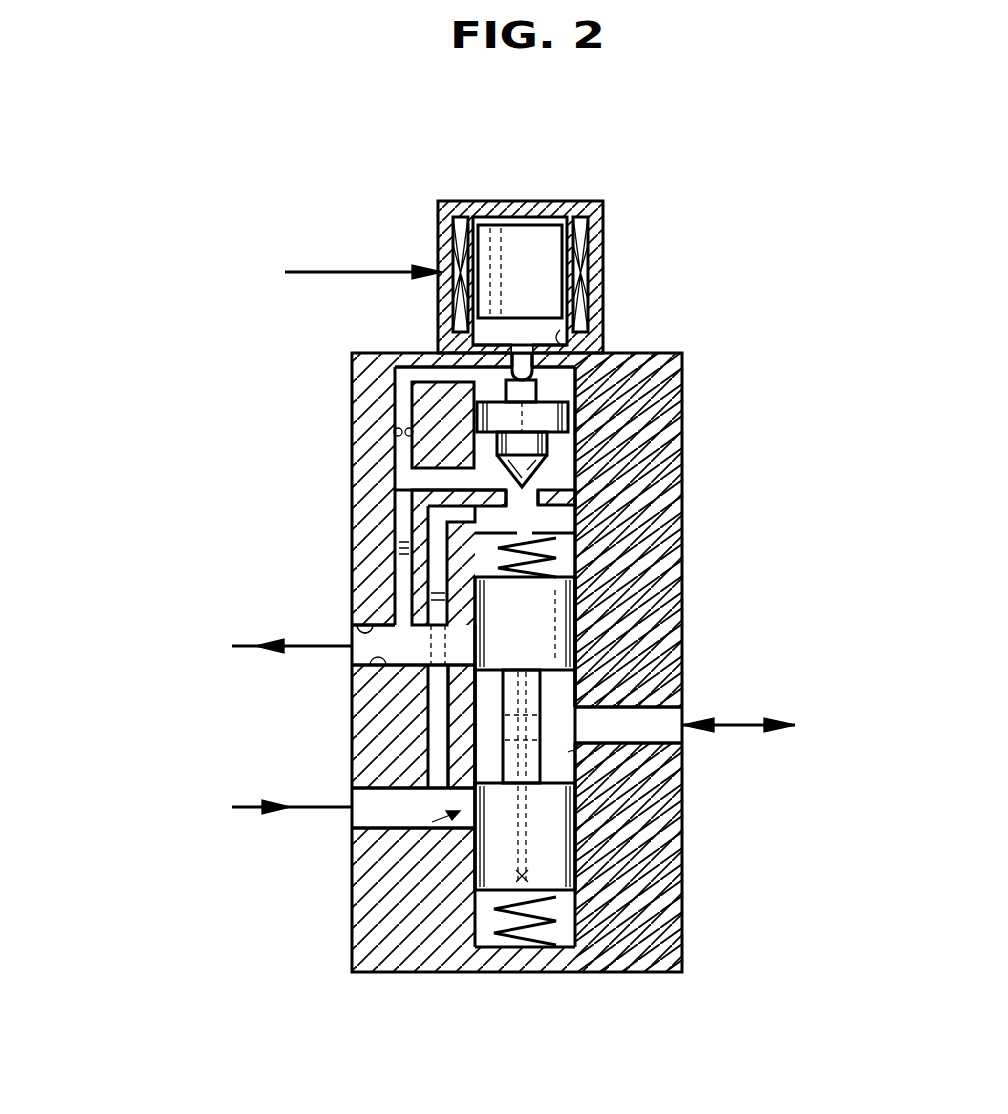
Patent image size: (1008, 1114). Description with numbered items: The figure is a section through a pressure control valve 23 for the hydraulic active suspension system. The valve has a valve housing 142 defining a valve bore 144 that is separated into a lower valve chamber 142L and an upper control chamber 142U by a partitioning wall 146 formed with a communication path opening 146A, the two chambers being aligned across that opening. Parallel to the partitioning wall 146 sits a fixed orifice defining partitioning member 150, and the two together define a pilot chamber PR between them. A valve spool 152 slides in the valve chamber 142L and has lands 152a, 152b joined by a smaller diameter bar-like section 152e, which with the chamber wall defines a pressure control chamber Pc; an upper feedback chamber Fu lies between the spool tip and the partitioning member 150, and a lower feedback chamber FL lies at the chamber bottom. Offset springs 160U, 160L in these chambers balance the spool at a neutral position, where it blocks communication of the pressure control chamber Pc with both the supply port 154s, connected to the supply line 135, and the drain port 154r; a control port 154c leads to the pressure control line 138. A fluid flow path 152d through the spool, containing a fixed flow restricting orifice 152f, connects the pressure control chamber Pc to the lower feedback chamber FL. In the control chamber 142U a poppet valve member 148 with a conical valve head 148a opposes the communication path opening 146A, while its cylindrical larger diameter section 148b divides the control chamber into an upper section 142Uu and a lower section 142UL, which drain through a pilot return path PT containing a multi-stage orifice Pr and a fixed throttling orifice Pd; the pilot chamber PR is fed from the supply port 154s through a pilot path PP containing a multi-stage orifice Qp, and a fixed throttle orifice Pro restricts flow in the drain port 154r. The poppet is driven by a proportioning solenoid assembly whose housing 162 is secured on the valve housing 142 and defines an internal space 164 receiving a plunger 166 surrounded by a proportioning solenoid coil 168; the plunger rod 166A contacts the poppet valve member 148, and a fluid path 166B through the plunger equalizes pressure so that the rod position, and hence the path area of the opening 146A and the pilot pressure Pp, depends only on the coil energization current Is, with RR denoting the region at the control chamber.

The valve housing 142 is at (405, 950).
The upper section of control chamber 142Uu is at (462, 357).
The control chamber 142U is at (640, 423).
The lower section of control chamber 142UL is at (430, 462).
The valve chamber 142L is at (430, 580).
The partitioning wall 146 is at (585, 470).
The communication path opening 146A is at (625, 455).
The poppet valve member 148 is at (565, 380).
The valve head 148a is at (470, 480).
The cylindrical larger diameter section 148b is at (568, 400).
The fixed orifice defining partitioning member 150 is at (560, 545).
The upper offset spring 160U is at (515, 580).
The valve spool 152 is at (370, 862).
The land 152a is at (560, 840).
The land 152b is at (578, 615).
The fluid flow path 152d is at (540, 870).
The bar-like section 152e is at (540, 690).
The fixed flow restricting orifice 152f is at (480, 870).
The drain port 154r is at (372, 648).
The supply port 154s is at (400, 820).
The control port 154c is at (683, 715).
The valve bore 144 is at (578, 752).
The lower offset spring 160L is at (525, 928).
The housing 162 is at (572, 215).
The internal space 164 is at (578, 332).
The plunger 166 is at (528, 235).
The plunger rod 166A is at (520, 330).
The fluid path 166B is at (490, 225).
The proportioning solenoid coil 168 is at (455, 232).
The supply line 135 is at (252, 810).
The pressure control line 138 is at (770, 727).
The pressure control valve 23 is at (720, 313).
The return chamber RR is at (400, 410).
The fixed throttling orifice Pd is at (395, 445).
The pilot return path PT is at (400, 522).
The multi-stage orifice Pr is at (408, 558).
The multi-stage orifice Qp is at (470, 610).
The fixed throttle orifice Pro is at (362, 640).
The pilot path PP is at (435, 737).
The pilot chamber PR is at (560, 500).
The upper feedback chamber Fu is at (565, 575).
The pressure control chamber Pc is at (550, 797).
The lower feedback chamber FL is at (570, 928).
The solenoid current Is is at (350, 274).
The pilot pressure Pp is at (511, 518).